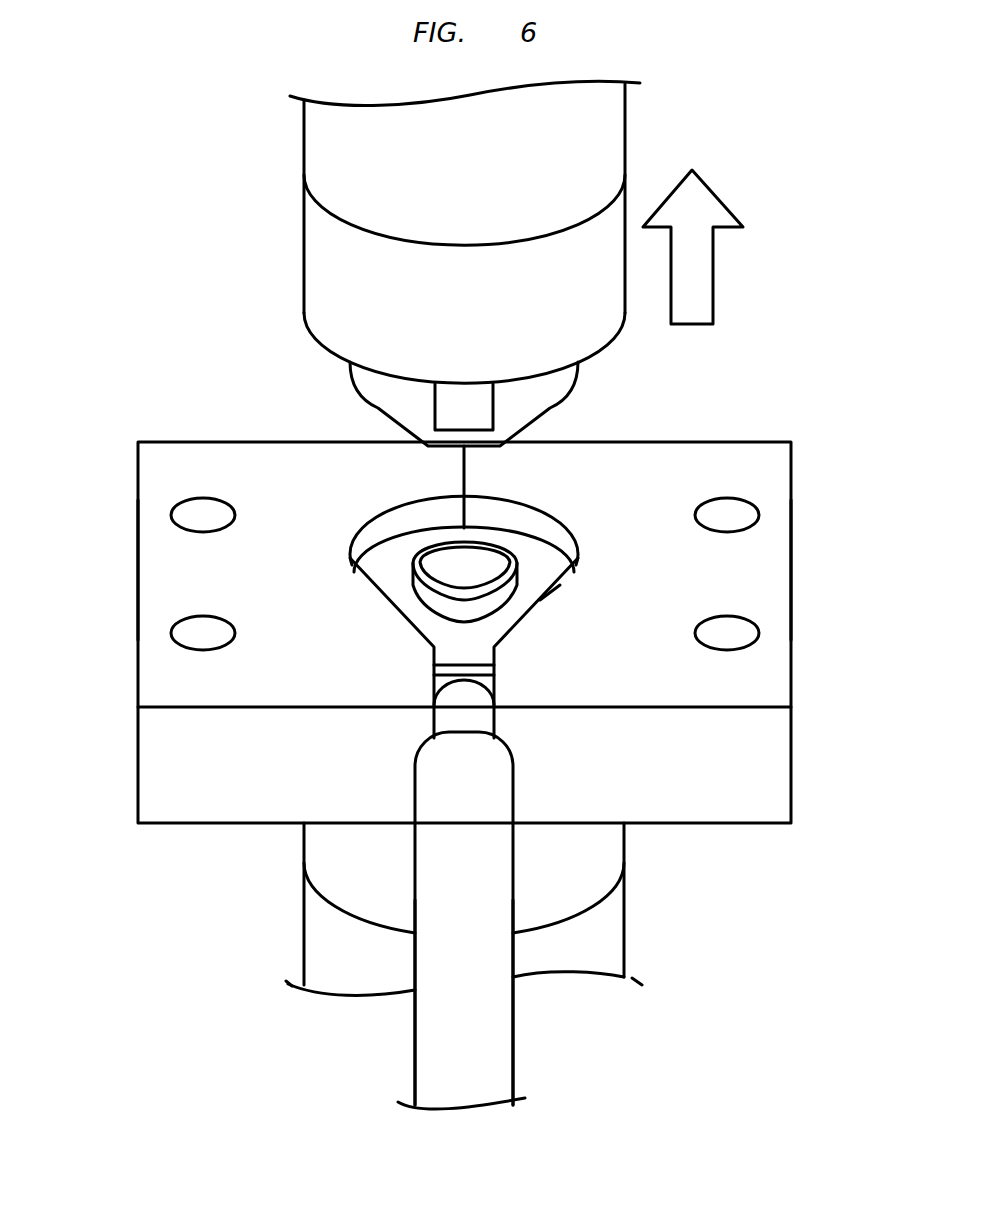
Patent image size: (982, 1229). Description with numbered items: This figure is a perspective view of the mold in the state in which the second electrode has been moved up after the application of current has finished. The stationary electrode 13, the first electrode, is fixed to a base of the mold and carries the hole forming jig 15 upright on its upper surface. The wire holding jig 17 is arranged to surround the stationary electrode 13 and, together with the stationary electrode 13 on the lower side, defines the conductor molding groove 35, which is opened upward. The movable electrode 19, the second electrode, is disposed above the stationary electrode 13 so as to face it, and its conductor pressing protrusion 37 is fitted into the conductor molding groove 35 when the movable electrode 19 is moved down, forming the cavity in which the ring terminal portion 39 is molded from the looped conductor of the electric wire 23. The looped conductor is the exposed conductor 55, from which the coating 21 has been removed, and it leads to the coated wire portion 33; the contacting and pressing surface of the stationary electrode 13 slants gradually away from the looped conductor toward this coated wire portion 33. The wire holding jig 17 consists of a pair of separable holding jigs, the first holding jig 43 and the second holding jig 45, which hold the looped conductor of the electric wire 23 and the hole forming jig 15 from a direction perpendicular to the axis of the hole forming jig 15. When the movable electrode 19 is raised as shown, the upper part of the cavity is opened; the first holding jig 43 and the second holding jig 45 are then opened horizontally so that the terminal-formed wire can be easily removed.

The stationary electrode 13 is at (286, 956).
The hole forming jig 15 is at (412, 577).
The wire holding jig 17 is at (188, 422).
The movable electrode 19 is at (286, 139).
The coating 21 is at (455, 738).
The electric wire 23 is at (396, 1052).
The coated wire portion 33 is at (432, 885).
The conductor molding groove 35 is at (536, 530).
The conductor pressing protrusion 37 is at (372, 408).
The ring terminal portion 39 is at (547, 573).
The first holding jig 43 is at (791, 577).
The second holding jig 45 is at (138, 571).
The exposed conductor 55 is at (466, 687).